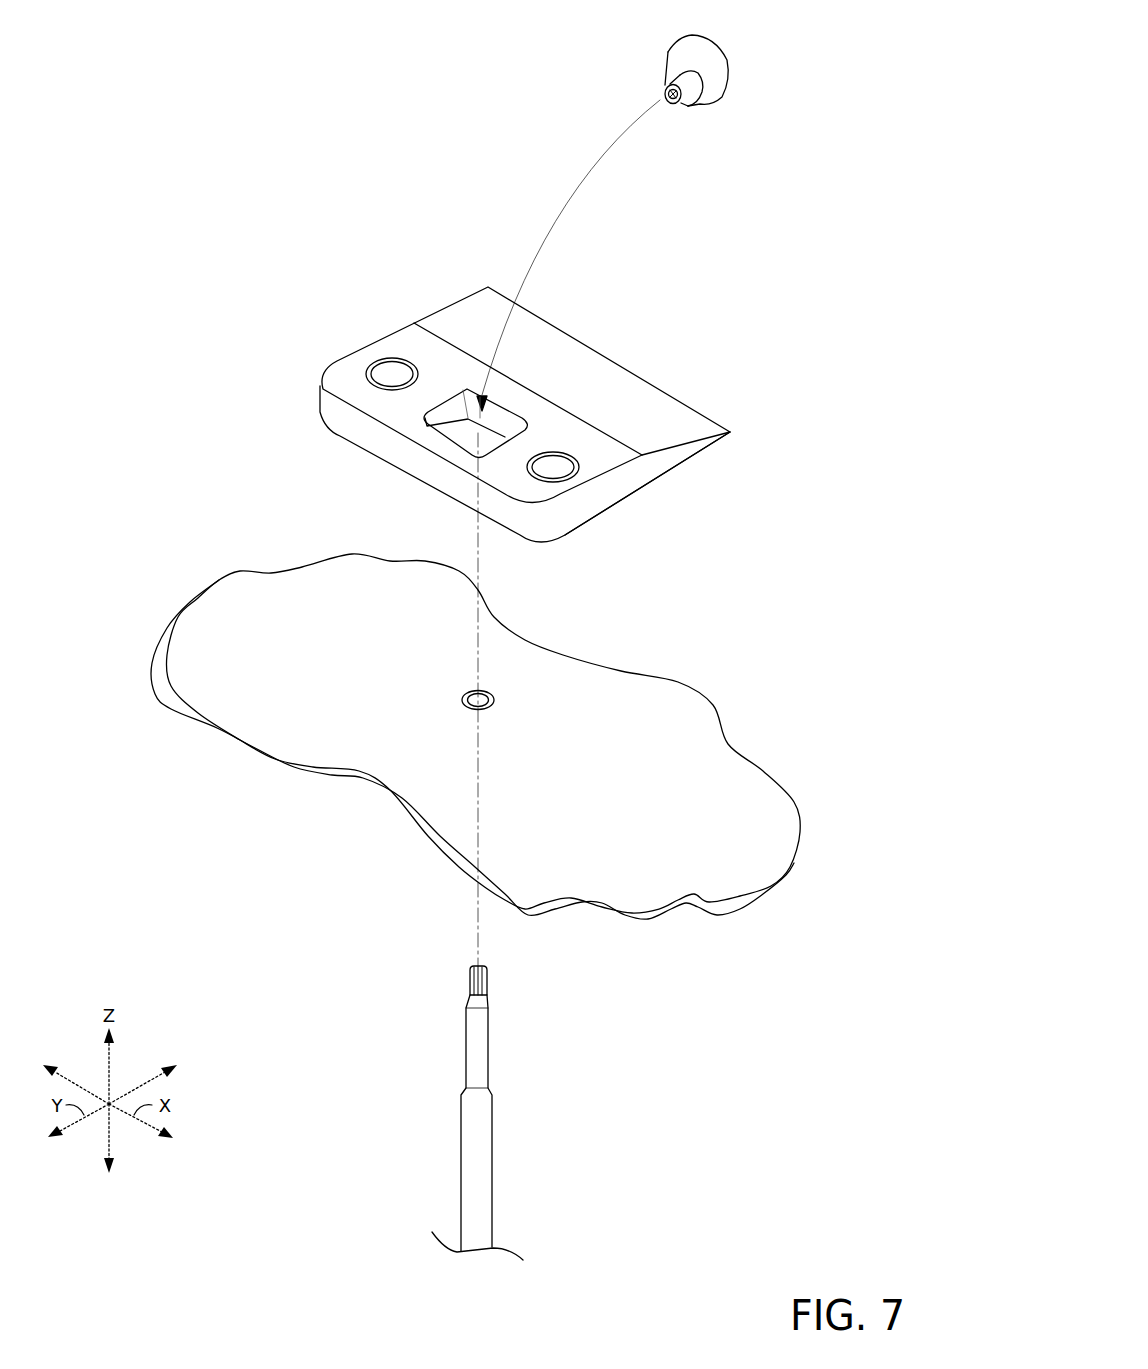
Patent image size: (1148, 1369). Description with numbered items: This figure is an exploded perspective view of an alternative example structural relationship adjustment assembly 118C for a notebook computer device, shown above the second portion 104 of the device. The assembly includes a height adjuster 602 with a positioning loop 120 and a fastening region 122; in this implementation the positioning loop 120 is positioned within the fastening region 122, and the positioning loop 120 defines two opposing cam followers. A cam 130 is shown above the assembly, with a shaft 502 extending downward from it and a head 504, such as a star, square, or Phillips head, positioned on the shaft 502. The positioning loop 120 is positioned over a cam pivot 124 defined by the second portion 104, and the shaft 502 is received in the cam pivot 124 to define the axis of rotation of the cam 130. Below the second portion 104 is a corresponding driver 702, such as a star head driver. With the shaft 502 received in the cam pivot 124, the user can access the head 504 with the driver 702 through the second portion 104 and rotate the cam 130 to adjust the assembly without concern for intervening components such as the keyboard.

The structural relationship adjustment assembly 118C is at (284, 120).
The cam 130 is at (687, 34).
The driver head 504 is at (664, 90).
The shaft 502 is at (688, 98).
The height adjuster 602 is at (443, 310).
The positioning loop 120 is at (435, 436).
The fastening region 122 is at (617, 510).
The second portion 104 is at (678, 857).
The cam pivot 124 is at (494, 700).
The driver 702 is at (492, 1148).